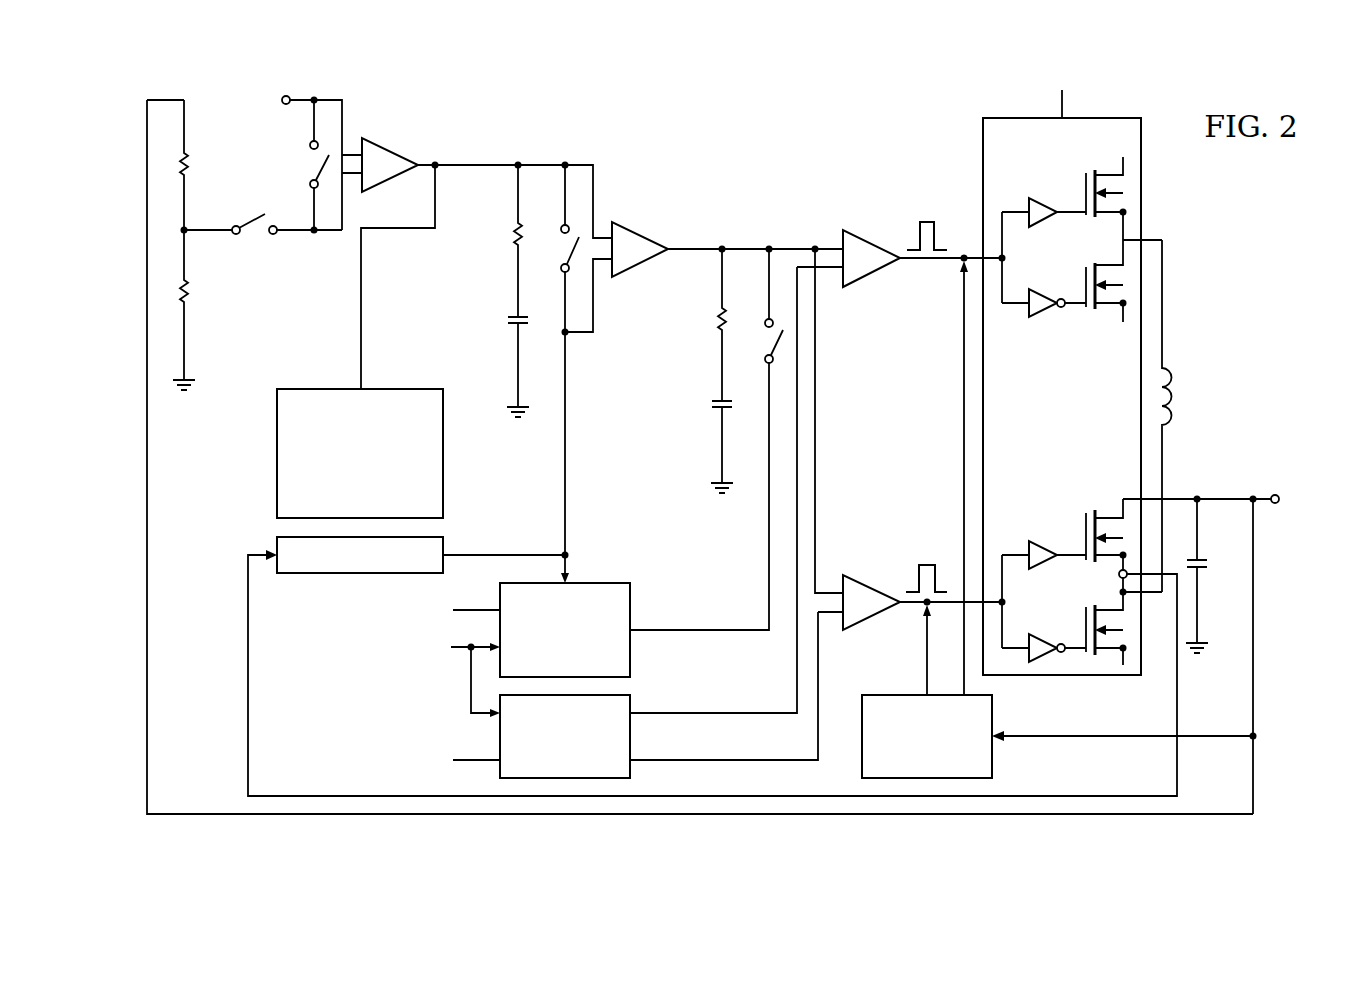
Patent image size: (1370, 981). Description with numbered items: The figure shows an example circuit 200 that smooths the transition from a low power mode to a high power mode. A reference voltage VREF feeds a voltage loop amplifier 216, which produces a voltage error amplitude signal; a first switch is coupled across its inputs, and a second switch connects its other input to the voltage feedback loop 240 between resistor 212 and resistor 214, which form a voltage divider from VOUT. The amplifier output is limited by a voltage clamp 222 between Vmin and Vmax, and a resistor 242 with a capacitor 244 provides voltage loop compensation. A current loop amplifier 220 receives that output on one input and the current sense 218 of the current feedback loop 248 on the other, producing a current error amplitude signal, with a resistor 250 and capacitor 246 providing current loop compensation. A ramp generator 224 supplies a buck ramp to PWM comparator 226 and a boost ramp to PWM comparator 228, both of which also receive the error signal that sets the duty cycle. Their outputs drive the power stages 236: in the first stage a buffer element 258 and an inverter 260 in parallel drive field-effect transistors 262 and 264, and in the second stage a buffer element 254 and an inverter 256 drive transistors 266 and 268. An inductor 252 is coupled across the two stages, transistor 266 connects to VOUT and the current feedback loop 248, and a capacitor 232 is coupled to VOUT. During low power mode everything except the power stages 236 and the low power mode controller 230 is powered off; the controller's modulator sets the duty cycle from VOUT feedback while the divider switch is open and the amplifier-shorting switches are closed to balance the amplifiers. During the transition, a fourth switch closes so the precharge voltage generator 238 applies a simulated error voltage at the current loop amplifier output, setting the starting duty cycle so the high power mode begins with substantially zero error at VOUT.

The circuit 200 is at (837, 106).
The resistor 212 is at (190, 166).
The resistor 214 is at (190, 295).
The voltage loop amplifier 216 is at (388, 150).
The current sense 218 is at (360, 576).
The current loop amplifier 220 is at (640, 234).
The voltage clamp 222 is at (276, 453).
The ramp generator 224 is at (547, 764).
The PWM comparator 226 is at (873, 240).
The PWM comparator 228 is at (873, 585).
The low power mode controller 230 is at (910, 695).
The capacitor 232 is at (1208, 563).
The power stages 236 is at (1110, 112).
The precharge voltage generator 238 is at (592, 583).
The voltage feedback loop 240 is at (1255, 620).
The resistor 242 is at (513, 238).
The capacitor 244 is at (507, 321).
The capacitor 246 is at (712, 405).
The current feedback loop 248 is at (1178, 683).
The resistor 250 is at (717, 322).
The inductor 252 is at (1172, 378).
The buffer element 254 is at (1047, 541).
The inverter 256 is at (1047, 634).
The buffer element 258 is at (1047, 197).
The inverter 260 is at (1047, 290).
The field-effect transistor 262 is at (1086, 171).
The field-effect transistor 264 is at (1086, 265).
The field-effect transistor 266 is at (1086, 513).
The field-effect transistor 268 is at (1086, 607).